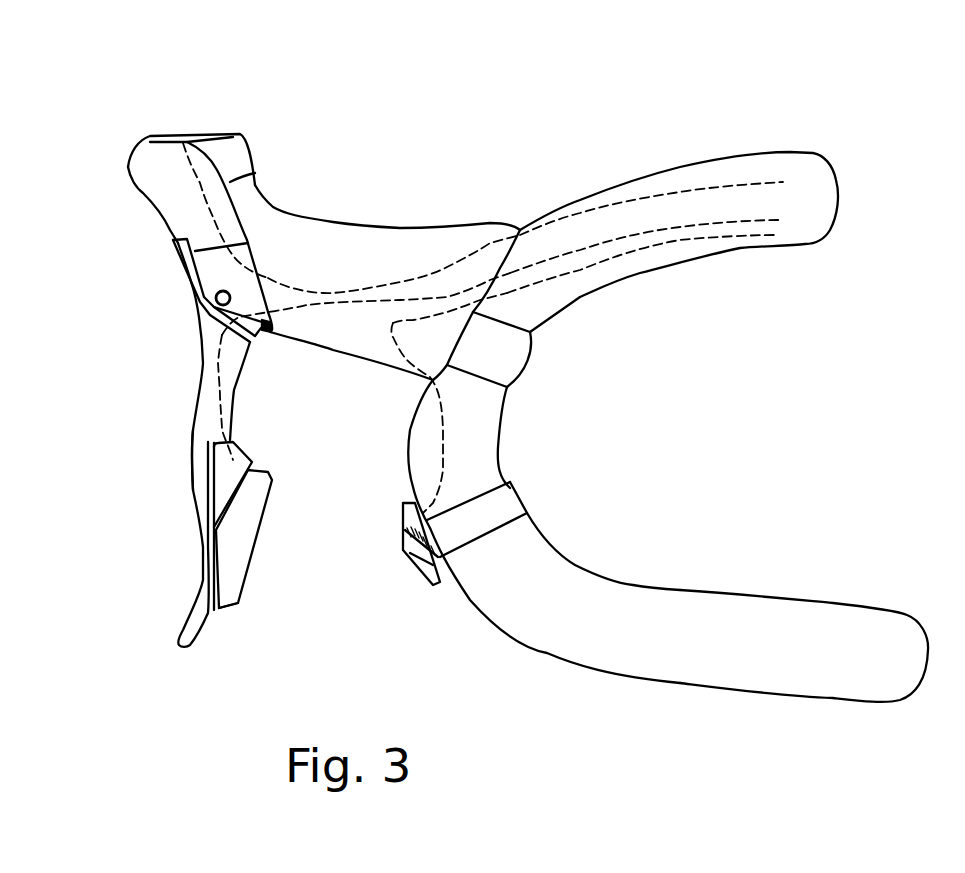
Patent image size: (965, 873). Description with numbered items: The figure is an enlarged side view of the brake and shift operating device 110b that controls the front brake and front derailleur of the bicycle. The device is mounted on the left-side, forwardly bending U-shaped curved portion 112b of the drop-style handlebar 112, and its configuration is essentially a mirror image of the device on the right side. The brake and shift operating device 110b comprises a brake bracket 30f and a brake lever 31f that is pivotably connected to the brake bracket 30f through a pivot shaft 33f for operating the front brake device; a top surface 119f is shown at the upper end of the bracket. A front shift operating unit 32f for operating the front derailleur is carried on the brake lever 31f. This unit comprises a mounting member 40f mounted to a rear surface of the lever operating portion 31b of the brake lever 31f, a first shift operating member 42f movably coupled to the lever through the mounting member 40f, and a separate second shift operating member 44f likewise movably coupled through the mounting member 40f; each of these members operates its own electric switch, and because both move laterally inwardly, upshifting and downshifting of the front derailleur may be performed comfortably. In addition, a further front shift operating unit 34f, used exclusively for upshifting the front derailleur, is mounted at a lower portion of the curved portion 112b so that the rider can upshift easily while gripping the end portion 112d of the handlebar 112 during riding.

The top surface of bracket 119f is at (217, 133).
The brake and shift operating device 110b is at (380, 177).
The brake bracket 30f is at (433, 227).
The handlebar 112 is at (752, 130).
The curved portion 112b is at (410, 428).
The end portion 112d is at (778, 650).
The brake lever 31f is at (193, 344).
The lever operating portion 31b is at (192, 420).
The pivot shaft 33f is at (215, 297).
The mounting member 40f is at (221, 419).
The first shift operating member 42f is at (228, 472).
The second shift operating member 44f is at (250, 505).
The front shift operating unit 32f is at (268, 587).
The front shift operating unit 34f is at (423, 573).